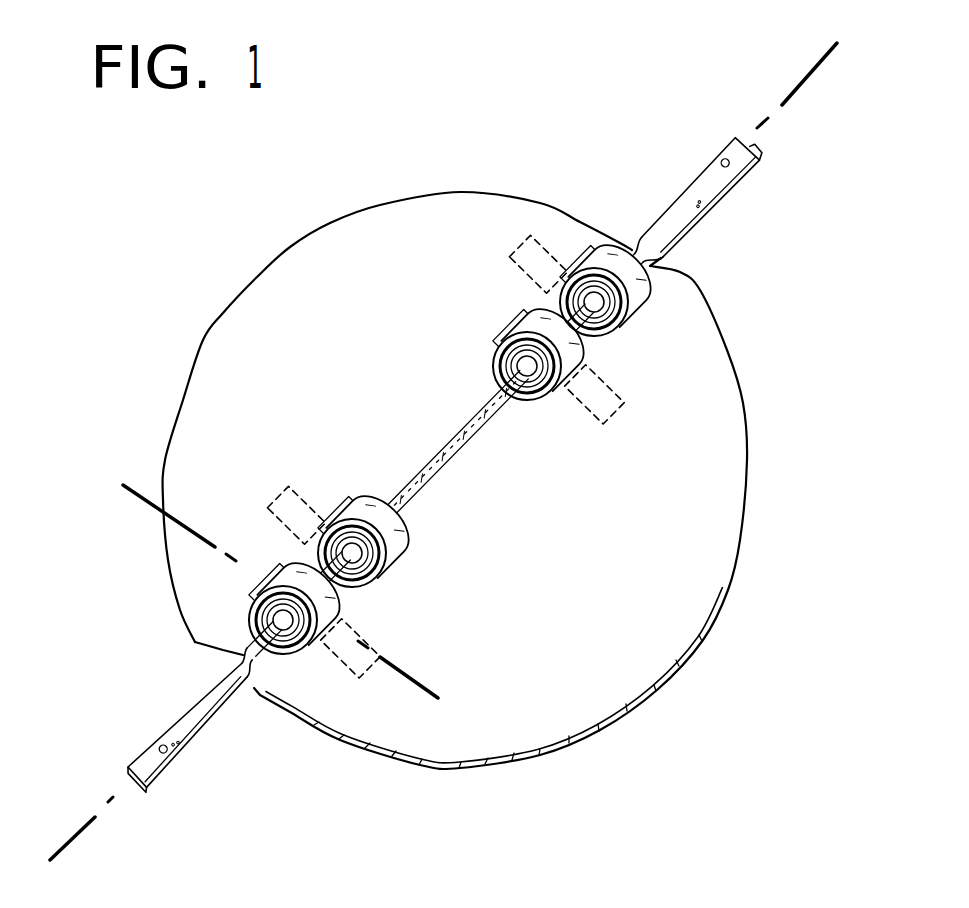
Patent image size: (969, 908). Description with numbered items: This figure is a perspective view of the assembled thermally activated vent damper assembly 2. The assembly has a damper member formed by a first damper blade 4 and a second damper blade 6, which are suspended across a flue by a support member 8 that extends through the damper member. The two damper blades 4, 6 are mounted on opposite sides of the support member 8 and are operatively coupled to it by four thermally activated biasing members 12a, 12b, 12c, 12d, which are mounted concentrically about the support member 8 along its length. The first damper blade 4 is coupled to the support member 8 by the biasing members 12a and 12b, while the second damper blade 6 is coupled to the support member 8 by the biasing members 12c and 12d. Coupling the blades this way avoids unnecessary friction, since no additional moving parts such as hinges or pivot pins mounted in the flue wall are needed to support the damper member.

The thermally activated vent damper assembly 2 is at (177, 494).
The first damper blade 4 is at (732, 406).
The second damper blade 6 is at (233, 323).
The support member 8 is at (472, 461).
The thermally activated biasing member 12a is at (275, 582).
The thermally activated biasing member 12b is at (522, 322).
The thermally activated biasing member 12c is at (352, 510).
The thermally activated biasing member 12d is at (626, 250).